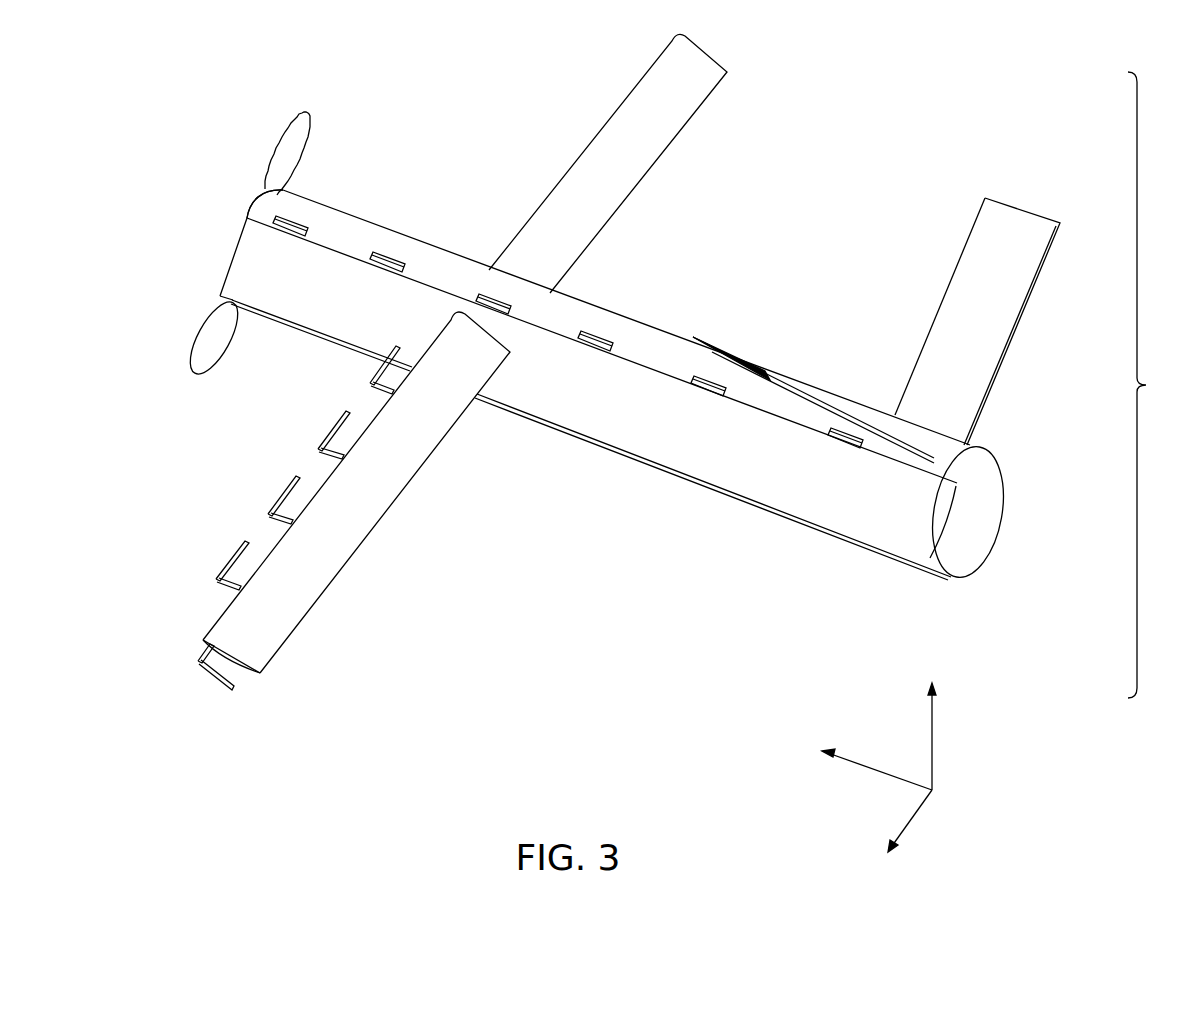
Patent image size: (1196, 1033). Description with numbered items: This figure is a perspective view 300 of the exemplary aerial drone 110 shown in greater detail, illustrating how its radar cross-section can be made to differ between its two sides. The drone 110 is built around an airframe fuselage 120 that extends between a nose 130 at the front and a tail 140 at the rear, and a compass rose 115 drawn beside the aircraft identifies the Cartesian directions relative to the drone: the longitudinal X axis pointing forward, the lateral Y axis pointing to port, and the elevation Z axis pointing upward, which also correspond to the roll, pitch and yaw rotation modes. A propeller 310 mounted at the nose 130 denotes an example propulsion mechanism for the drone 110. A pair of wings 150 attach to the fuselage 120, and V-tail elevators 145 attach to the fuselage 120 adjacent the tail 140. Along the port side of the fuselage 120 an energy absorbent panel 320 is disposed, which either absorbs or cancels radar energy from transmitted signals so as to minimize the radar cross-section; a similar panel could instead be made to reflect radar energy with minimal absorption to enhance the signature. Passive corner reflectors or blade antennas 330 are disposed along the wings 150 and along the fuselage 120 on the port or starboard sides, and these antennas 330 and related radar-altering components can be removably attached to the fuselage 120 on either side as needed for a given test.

The perspective view 300 is at (393, 93).
The aerial drone 110 is at (1155, 385).
The compass rose 115 is at (886, 764).
The airframe fuselage 120 is at (650, 324).
The nose 130 is at (262, 200).
The tail 140 is at (957, 460).
The V-tail elevators 145 is at (757, 357).
The wings 150 is at (665, 155).
The propeller 310 is at (278, 150).
The energy absorbent panel 320 is at (628, 437).
The blade antennas 330 is at (294, 233).